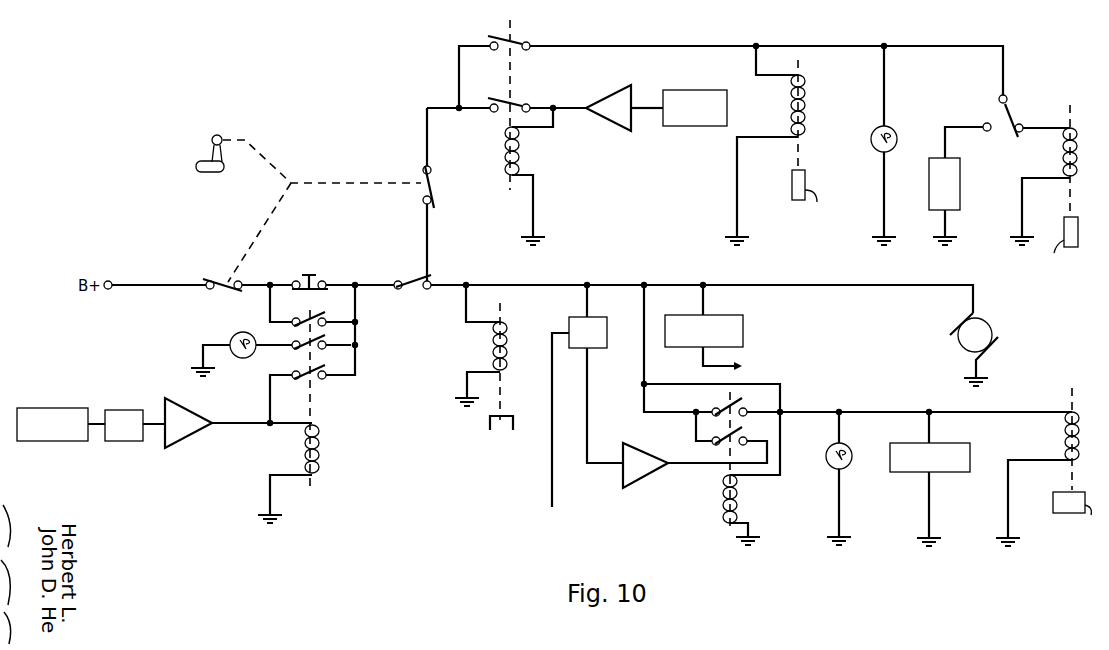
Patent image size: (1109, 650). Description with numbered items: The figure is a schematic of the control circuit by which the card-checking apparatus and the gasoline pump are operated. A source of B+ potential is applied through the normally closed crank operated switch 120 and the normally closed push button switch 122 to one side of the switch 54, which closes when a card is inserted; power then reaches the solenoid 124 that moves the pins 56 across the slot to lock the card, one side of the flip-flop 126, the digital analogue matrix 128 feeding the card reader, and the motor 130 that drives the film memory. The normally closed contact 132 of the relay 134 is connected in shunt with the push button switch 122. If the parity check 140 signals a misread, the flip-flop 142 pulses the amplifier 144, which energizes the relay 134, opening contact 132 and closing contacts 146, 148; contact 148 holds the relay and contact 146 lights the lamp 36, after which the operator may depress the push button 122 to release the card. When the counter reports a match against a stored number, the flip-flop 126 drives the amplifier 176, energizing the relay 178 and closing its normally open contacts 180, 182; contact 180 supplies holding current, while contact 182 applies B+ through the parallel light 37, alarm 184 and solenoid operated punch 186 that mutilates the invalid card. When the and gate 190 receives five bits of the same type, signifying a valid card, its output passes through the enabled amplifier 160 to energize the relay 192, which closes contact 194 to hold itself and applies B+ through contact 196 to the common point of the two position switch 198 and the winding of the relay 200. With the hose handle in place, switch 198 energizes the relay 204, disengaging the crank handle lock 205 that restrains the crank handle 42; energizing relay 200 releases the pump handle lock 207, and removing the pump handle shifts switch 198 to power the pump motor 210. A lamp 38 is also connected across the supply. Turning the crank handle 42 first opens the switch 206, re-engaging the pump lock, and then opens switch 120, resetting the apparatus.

The lamp 36 is at (243, 360).
The light 37 is at (843, 472).
The lamp 38 is at (890, 132).
The crank handle 42 is at (197, 165).
The switch 54 is at (412, 294).
The pins 56 is at (489, 419).
The crank operated switch 120 is at (222, 290).
The push button switch 122 is at (317, 283).
The solenoid 124 is at (492, 345).
The flip-flop 126 is at (571, 316).
The digital analogue matrix 128 is at (746, 318).
The motor 130 is at (991, 326).
The normally closed contact 132 is at (316, 319).
The relay 134 is at (320, 456).
The parity check 140 is at (57, 441).
The flip-flop 142 is at (122, 441).
The amplifier 144 is at (189, 438).
The contact 146 is at (316, 347).
The contact 148 is at (316, 375).
The amplifier 160 is at (620, 86).
The amplifier 176 is at (645, 480).
The relay 178 is at (737, 498).
The contact 180 is at (736, 434).
The contact 182 is at (736, 404).
The alarm 184 is at (978, 443).
The solenoid operated punch 186 is at (1064, 446).
The and gate 190 is at (708, 126).
The relay 192 is at (520, 146).
The contact 194 is at (522, 102).
The contact 196 is at (522, 40).
The two position switch 198 is at (1013, 109).
The relay 200 is at (807, 101).
The relay 204 is at (1062, 170).
The crank handle lock 205 is at (1062, 223).
The switch 206 is at (437, 188).
The pump handle lock 207 is at (805, 176).
The pump motor 210 is at (961, 193).